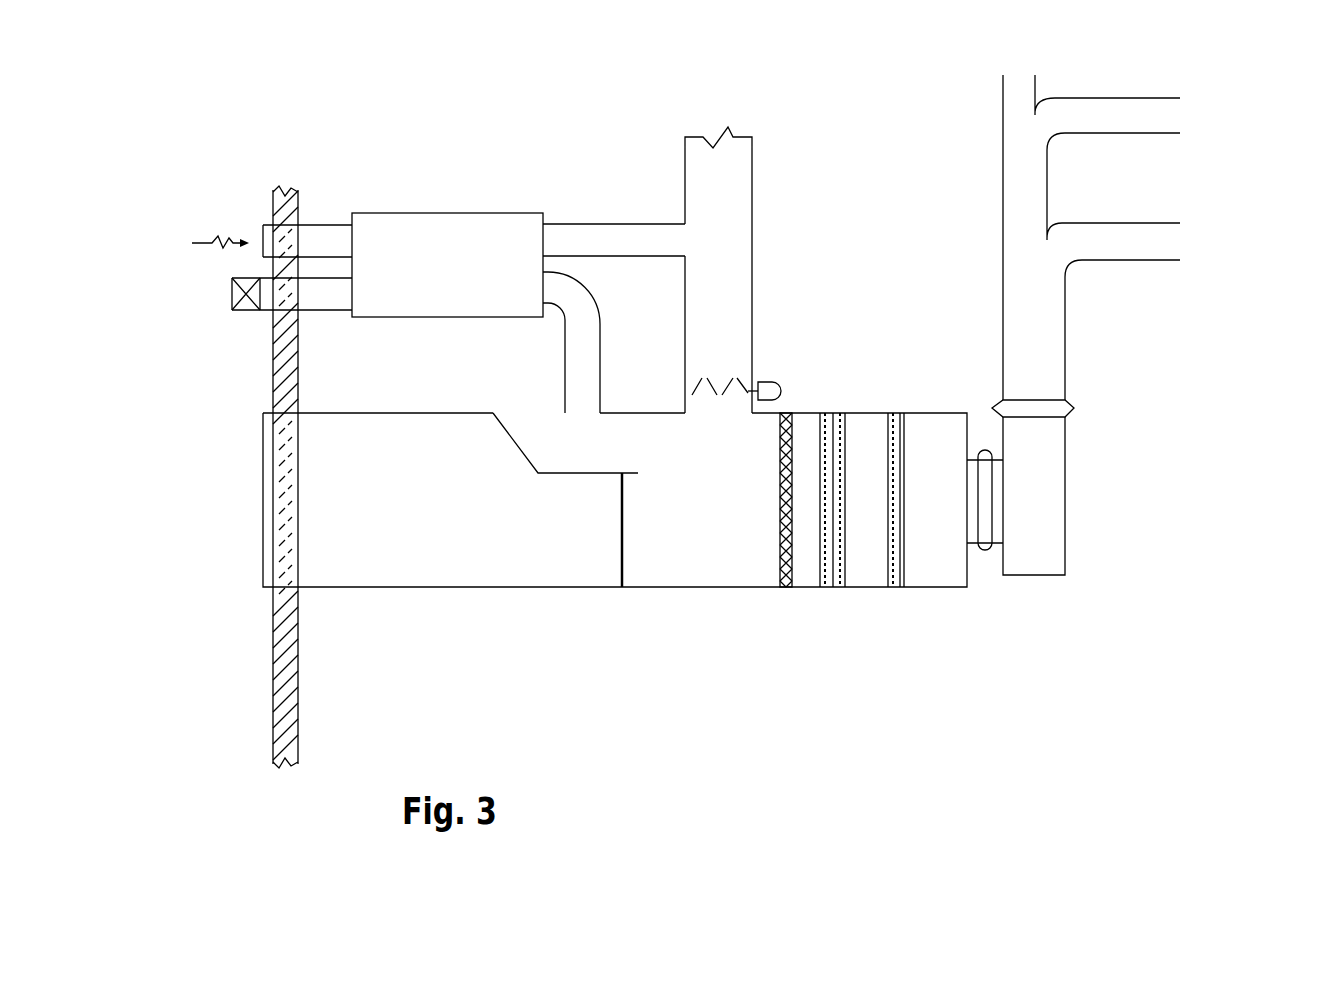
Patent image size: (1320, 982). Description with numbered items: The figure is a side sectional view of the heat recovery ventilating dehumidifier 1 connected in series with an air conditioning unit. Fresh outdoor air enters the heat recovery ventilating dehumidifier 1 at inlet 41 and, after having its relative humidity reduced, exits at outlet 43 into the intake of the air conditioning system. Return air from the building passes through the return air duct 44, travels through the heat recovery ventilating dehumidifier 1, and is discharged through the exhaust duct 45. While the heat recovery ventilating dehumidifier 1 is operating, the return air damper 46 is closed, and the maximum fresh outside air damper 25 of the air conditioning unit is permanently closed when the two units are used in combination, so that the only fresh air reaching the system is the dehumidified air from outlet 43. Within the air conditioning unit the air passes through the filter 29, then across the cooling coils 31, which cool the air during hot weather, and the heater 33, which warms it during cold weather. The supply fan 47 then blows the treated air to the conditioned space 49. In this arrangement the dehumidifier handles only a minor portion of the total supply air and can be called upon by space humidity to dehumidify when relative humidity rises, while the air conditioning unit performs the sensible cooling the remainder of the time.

The heat recovery ventilating dehumidifier 1 is at (438, 189).
The maximum fresh outside air damper 25 is at (603, 518).
The filter 29 is at (773, 502).
The cooling coils 31 is at (830, 600).
The heater 33 is at (898, 597).
The fresh outdoor air inlet 41 is at (215, 228).
The fresh air outlet 43 is at (565, 443).
The return air duct 44 is at (742, 120).
The exhaust duct 45 is at (225, 302).
The return air damper 46 is at (790, 376).
The supply fan 47 is at (1105, 492).
The conditioned space 49 is at (1139, 176).